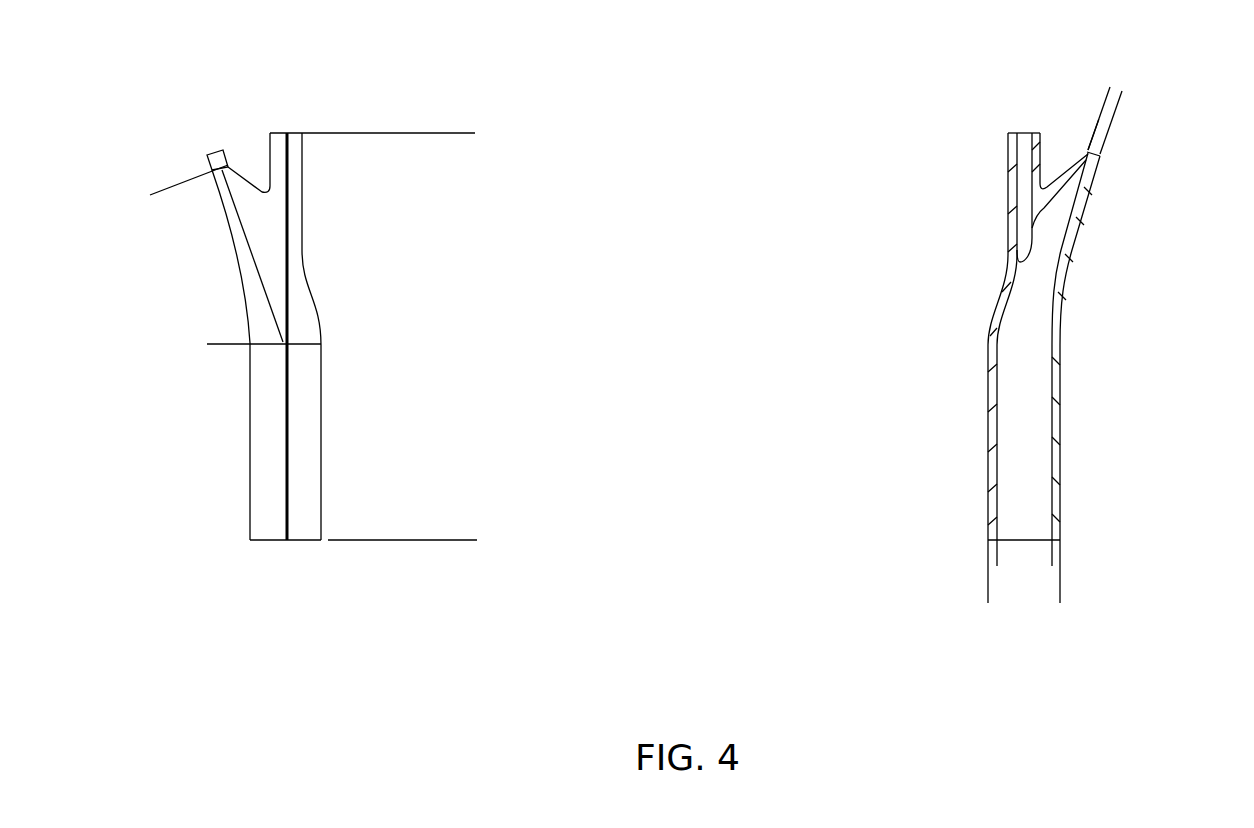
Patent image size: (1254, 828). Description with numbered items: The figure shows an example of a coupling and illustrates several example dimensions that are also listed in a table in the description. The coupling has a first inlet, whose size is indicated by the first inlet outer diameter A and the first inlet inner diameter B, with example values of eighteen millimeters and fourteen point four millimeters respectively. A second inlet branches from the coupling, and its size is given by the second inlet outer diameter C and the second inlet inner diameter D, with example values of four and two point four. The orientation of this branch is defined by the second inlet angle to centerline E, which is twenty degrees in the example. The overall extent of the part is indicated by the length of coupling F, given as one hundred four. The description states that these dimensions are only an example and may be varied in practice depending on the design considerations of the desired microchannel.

The first inlet outer diameter A is at (1060, 595).
The first inlet inner diameter B is at (947, 557).
The second inlet outer diameter C is at (1061, 76).
The second inlet inner diameter D is at (1052, 103).
The second inlet angle to centerline E is at (186, 182).
The length of coupling F is at (468, 147).